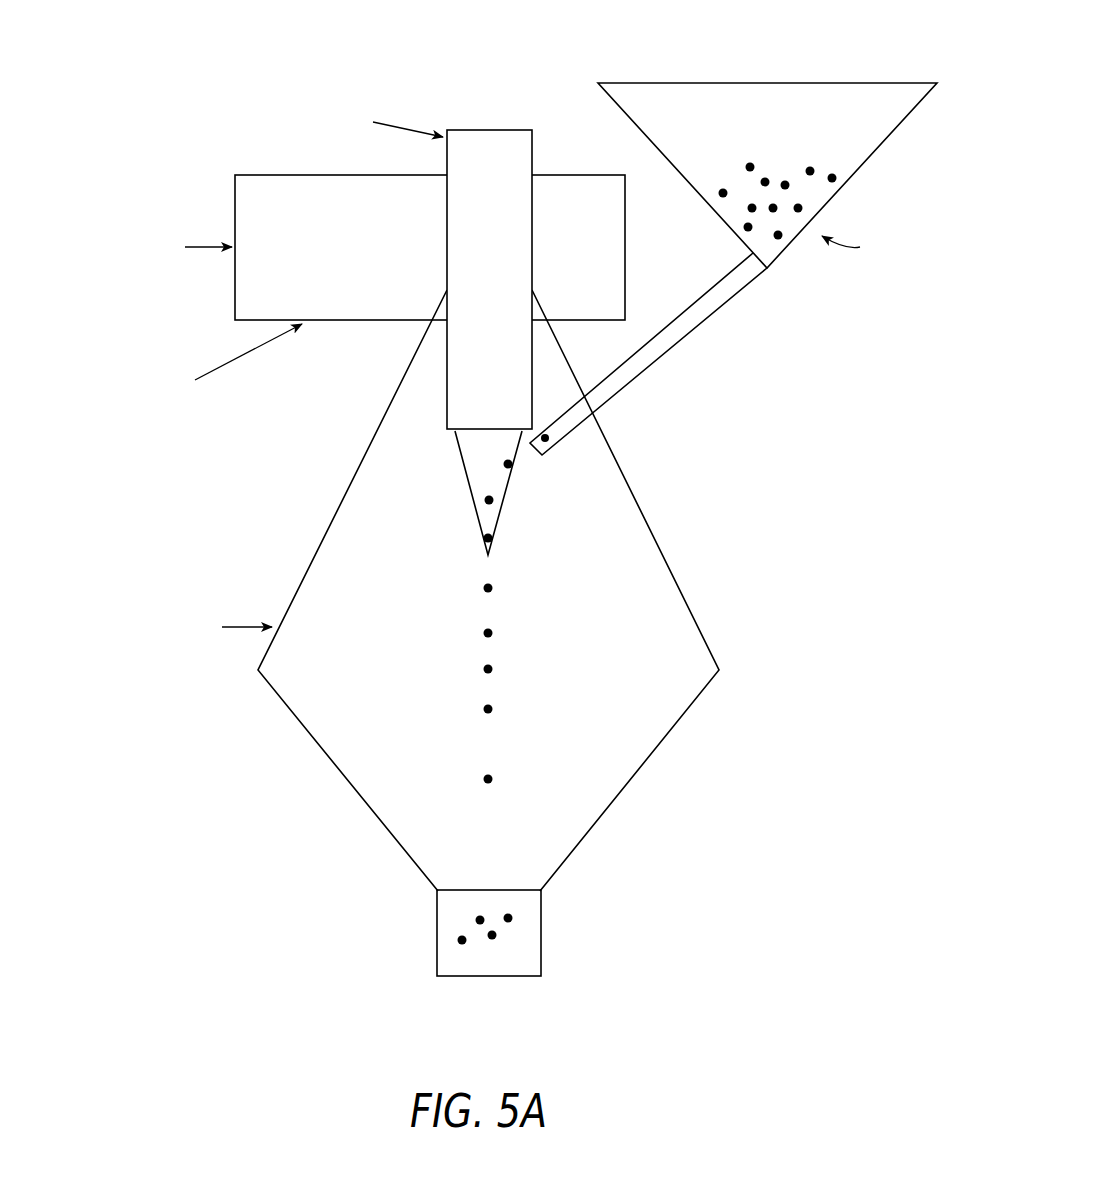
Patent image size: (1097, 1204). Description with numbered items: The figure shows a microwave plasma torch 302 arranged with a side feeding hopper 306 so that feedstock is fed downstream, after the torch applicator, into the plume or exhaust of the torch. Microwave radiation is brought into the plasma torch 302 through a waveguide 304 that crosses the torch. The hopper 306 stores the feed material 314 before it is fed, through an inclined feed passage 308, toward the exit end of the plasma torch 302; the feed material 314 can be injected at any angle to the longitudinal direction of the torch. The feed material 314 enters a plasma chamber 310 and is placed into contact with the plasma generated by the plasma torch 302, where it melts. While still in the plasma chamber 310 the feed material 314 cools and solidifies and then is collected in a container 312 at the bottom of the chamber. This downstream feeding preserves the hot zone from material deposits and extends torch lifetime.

The microwave plasma torch 302 is at (465, 118).
The waveguide 304 is at (214, 189).
The hopper 306 is at (862, 66).
The feed tube 308 is at (711, 285).
The plasma chamber 310 is at (325, 481).
The container 312 is at (420, 933).
The feed material 314 is at (780, 153).